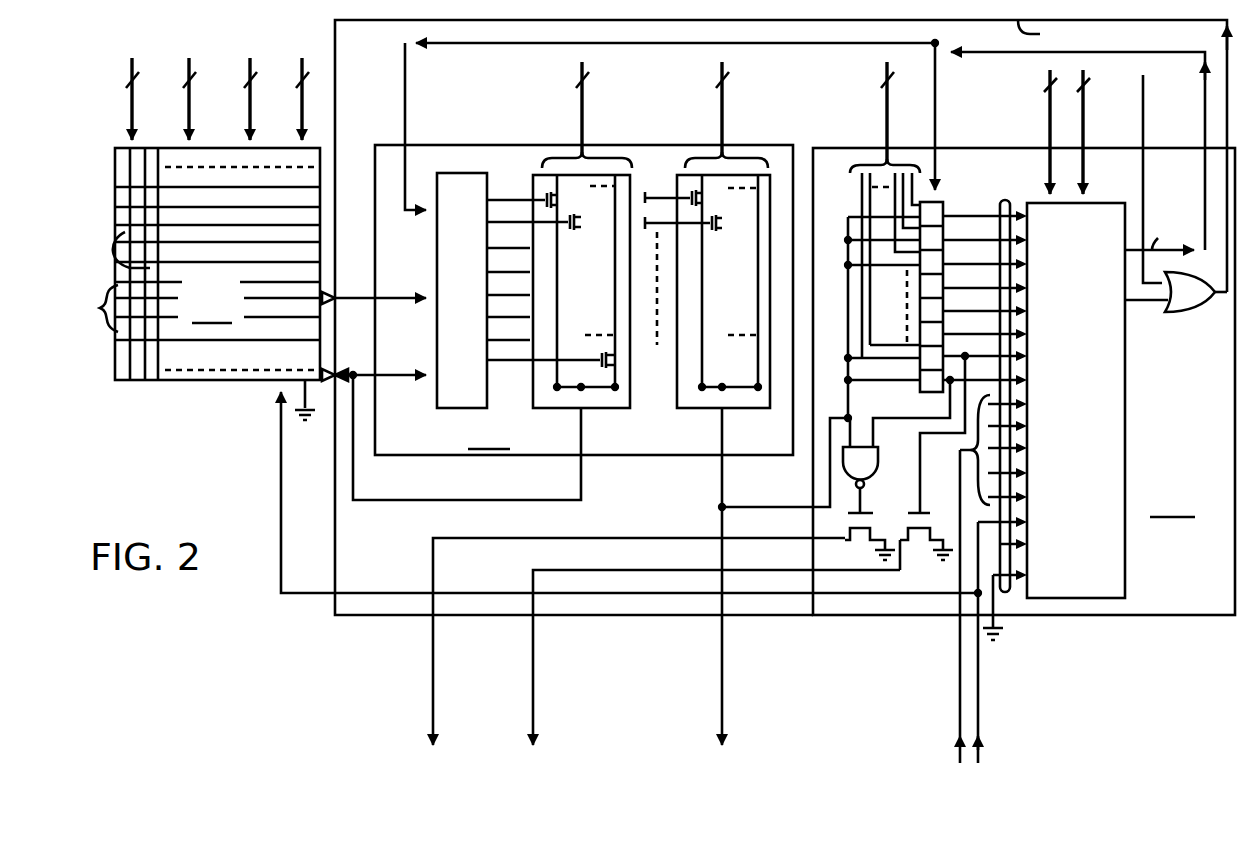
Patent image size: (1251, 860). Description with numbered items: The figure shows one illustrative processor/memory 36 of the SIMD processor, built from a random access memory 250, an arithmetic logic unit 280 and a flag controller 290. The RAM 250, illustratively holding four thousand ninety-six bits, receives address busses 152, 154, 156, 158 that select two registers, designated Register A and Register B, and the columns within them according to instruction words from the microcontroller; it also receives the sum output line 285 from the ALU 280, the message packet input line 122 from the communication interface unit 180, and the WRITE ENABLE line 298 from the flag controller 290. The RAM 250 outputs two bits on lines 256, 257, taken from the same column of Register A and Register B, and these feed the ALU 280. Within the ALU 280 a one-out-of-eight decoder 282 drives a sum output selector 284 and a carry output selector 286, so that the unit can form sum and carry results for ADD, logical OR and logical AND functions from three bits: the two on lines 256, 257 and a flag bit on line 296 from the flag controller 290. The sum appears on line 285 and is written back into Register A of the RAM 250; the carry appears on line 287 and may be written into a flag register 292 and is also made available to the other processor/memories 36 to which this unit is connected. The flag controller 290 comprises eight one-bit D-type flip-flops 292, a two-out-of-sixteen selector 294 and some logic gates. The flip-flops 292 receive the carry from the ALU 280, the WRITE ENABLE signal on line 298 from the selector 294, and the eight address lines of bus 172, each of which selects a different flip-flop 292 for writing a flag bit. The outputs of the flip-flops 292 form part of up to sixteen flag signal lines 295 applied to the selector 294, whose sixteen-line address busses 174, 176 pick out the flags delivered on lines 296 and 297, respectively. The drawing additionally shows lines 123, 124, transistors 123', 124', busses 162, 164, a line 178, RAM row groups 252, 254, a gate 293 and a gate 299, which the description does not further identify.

The message packet input line 122 is at (281, 562).
The daisy chain line 123 is at (602, 641).
The daisy chain line 124 is at (682, 642).
The transistor 123' is at (855, 536).
The transistor 124' is at (926, 549).
The bus 152 is at (250, 129).
The bus 154 is at (302, 125).
The bus 156 is at (128, 124).
The bus 158 is at (188, 126).
The control bus 162 is at (580, 131).
The control bus 164 is at (723, 130).
The bus 172 is at (886, 130).
The bus 174 is at (1048, 131).
The bus 176 is at (1086, 134).
The control line 178 is at (1145, 134).
The communication interface unit 180 is at (1060, 764).
The processor/memory 36 is at (700, 774).
The random access memory 250 is at (217, 284).
The RAM row group 252 is at (126, 226).
The RAM row group 254 is at (88, 308).
The output line 256 is at (393, 370).
The output line 257 is at (393, 300).
The arithmetic logic unit 280 is at (584, 300).
The one-out-of-eight decoder 282 is at (478, 388).
The sum output selector 284 is at (628, 412).
The sum output line 285 is at (581, 500).
The carry output selector 286 is at (742, 412).
The carry output line 287 is at (724, 520).
The flag controller 290 is at (1024, 381).
The flip-flops 292 is at (918, 392).
The AND gate 293 is at (866, 476).
The two-out-of-sixteen selector 294 is at (1128, 596).
The flag signal lines 295 is at (1010, 202).
The flag output line 296 is at (1191, 202).
The flag output line 297 is at (1150, 302).
The WRITE ENABLE line 298 is at (335, 82).
The OR gate 299 is at (1205, 300).